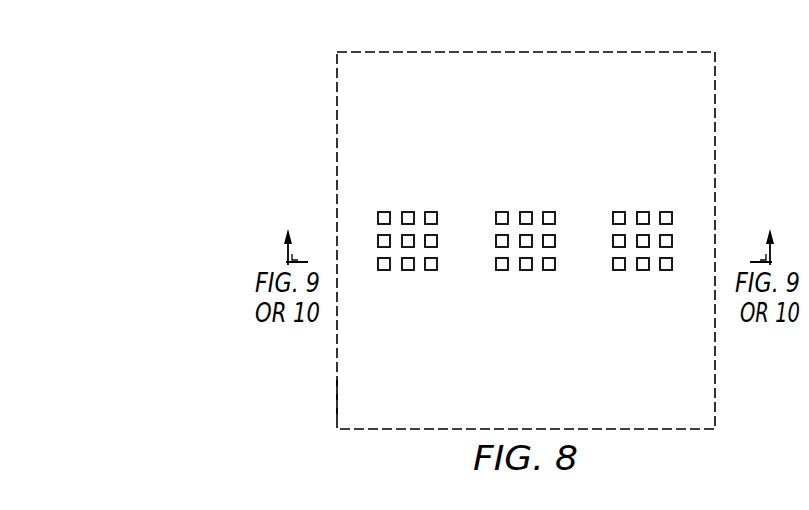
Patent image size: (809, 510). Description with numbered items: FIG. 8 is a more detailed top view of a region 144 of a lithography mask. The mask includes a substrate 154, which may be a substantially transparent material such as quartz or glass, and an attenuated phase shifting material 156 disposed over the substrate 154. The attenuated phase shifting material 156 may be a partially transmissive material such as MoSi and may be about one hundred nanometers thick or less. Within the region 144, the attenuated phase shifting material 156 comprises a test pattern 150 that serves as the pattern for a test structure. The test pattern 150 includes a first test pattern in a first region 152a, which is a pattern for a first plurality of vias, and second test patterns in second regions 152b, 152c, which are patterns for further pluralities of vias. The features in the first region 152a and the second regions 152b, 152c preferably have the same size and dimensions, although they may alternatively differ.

The region 144 is at (720, 148).
The test pattern 150 is at (517, 248).
The first region 152a is at (394, 198).
The second region 152b is at (535, 181).
The second region 152c is at (649, 181).
The substrate 154 is at (380, 211).
The attenuated phase shifting material 156 is at (352, 392).